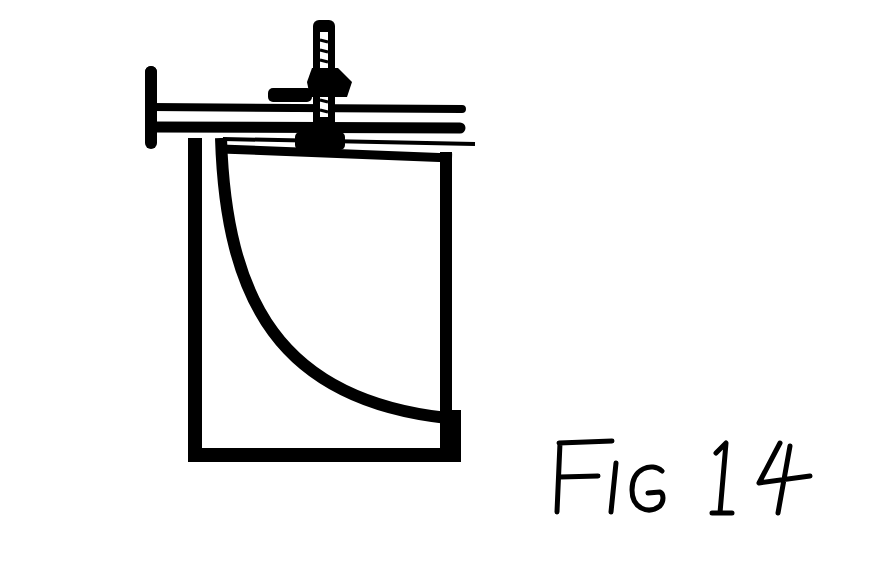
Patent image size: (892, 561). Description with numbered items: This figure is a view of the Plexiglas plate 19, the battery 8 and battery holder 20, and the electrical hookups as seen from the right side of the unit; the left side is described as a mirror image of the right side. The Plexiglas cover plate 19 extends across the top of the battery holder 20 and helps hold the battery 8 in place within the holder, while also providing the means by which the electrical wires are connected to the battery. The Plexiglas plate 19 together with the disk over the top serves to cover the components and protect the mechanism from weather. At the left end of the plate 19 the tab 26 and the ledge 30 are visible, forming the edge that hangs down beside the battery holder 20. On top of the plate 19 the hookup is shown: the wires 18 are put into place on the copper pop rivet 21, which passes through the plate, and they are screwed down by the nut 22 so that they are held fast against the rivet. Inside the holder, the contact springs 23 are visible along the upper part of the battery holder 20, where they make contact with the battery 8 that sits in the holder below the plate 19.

The battery 8 is at (400, 257).
The wires 18 is at (285, 96).
The Plexiglas cover plate 19 is at (421, 119).
The battery holder 20 is at (205, 268).
The copper pop rivet 21 is at (312, 98).
The nut 22 is at (342, 77).
The contact springs 23 is at (452, 163).
The tab 26 is at (147, 83).
The ledge 30 is at (152, 142).